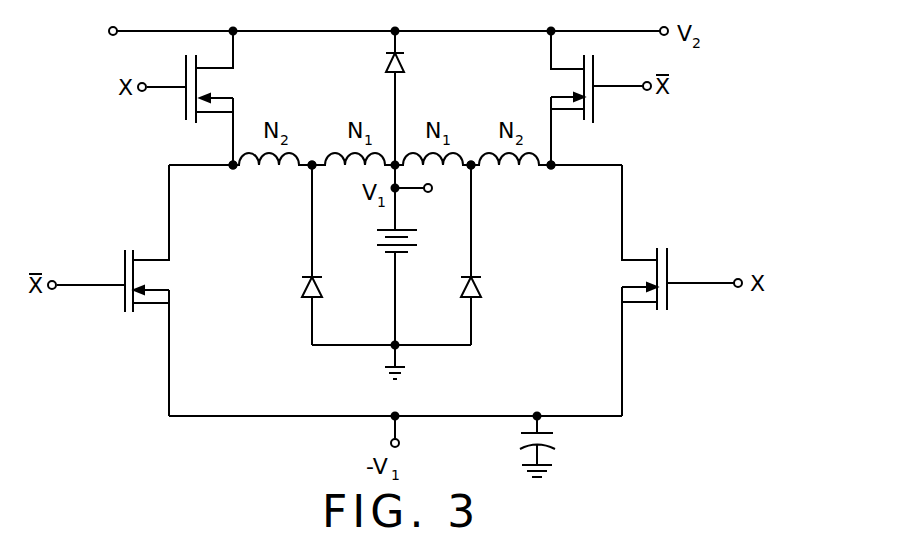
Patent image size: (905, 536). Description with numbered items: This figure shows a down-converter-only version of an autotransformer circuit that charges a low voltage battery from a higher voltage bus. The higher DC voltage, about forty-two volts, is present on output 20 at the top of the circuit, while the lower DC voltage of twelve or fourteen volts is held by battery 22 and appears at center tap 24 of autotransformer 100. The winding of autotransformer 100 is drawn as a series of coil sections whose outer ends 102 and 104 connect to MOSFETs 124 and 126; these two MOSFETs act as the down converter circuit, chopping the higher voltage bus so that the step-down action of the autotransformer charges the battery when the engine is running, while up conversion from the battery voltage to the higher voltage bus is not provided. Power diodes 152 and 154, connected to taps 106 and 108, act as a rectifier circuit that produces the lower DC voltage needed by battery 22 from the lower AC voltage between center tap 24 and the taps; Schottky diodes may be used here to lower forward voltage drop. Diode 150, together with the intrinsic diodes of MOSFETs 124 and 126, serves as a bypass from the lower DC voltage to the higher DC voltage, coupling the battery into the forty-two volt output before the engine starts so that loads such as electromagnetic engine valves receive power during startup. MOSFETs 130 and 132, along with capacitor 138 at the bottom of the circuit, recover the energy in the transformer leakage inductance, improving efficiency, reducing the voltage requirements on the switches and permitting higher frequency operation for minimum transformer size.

The output 20 is at (668, 36).
The battery 22 is at (388, 254).
The center tap 24 is at (422, 194).
The autotransformer 100 is at (245, 181).
The left winding end node 102 is at (232, 162).
The right winding end node 104 is at (552, 170).
The tap 106 is at (312, 168).
The tap 108 is at (471, 168).
The MOSFET 124 is at (187, 106).
The MOSFET 126 is at (598, 108).
The MOSFET 130 is at (125, 300).
The MOSFET 132 is at (667, 305).
The capacitor 138 is at (555, 438).
The diode 150 is at (383, 60).
The power diode 152 is at (305, 298).
The power diode 154 is at (478, 298).